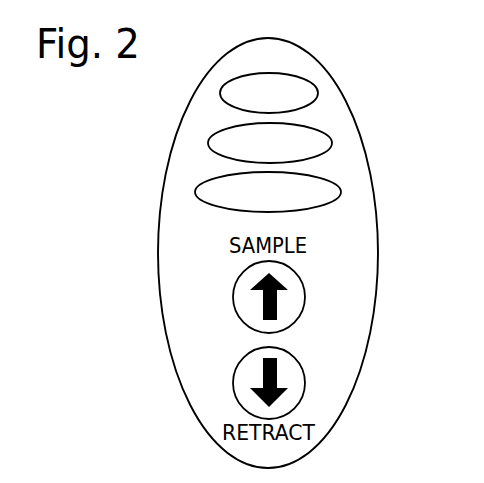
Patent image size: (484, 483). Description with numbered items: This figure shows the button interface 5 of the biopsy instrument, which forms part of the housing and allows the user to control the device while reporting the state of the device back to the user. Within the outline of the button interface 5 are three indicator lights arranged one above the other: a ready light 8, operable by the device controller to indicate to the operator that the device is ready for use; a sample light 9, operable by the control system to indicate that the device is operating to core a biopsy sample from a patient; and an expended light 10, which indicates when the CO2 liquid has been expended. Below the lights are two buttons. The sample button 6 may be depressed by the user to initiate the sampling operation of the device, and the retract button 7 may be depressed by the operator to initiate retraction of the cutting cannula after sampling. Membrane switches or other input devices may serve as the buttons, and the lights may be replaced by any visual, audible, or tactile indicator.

The button interface 5 is at (160, 245).
The sample button 6 is at (306, 297).
The retract button 7 is at (307, 398).
The ready light 8 is at (319, 88).
The sample light 9 is at (334, 140).
The expended light 10 is at (342, 192).